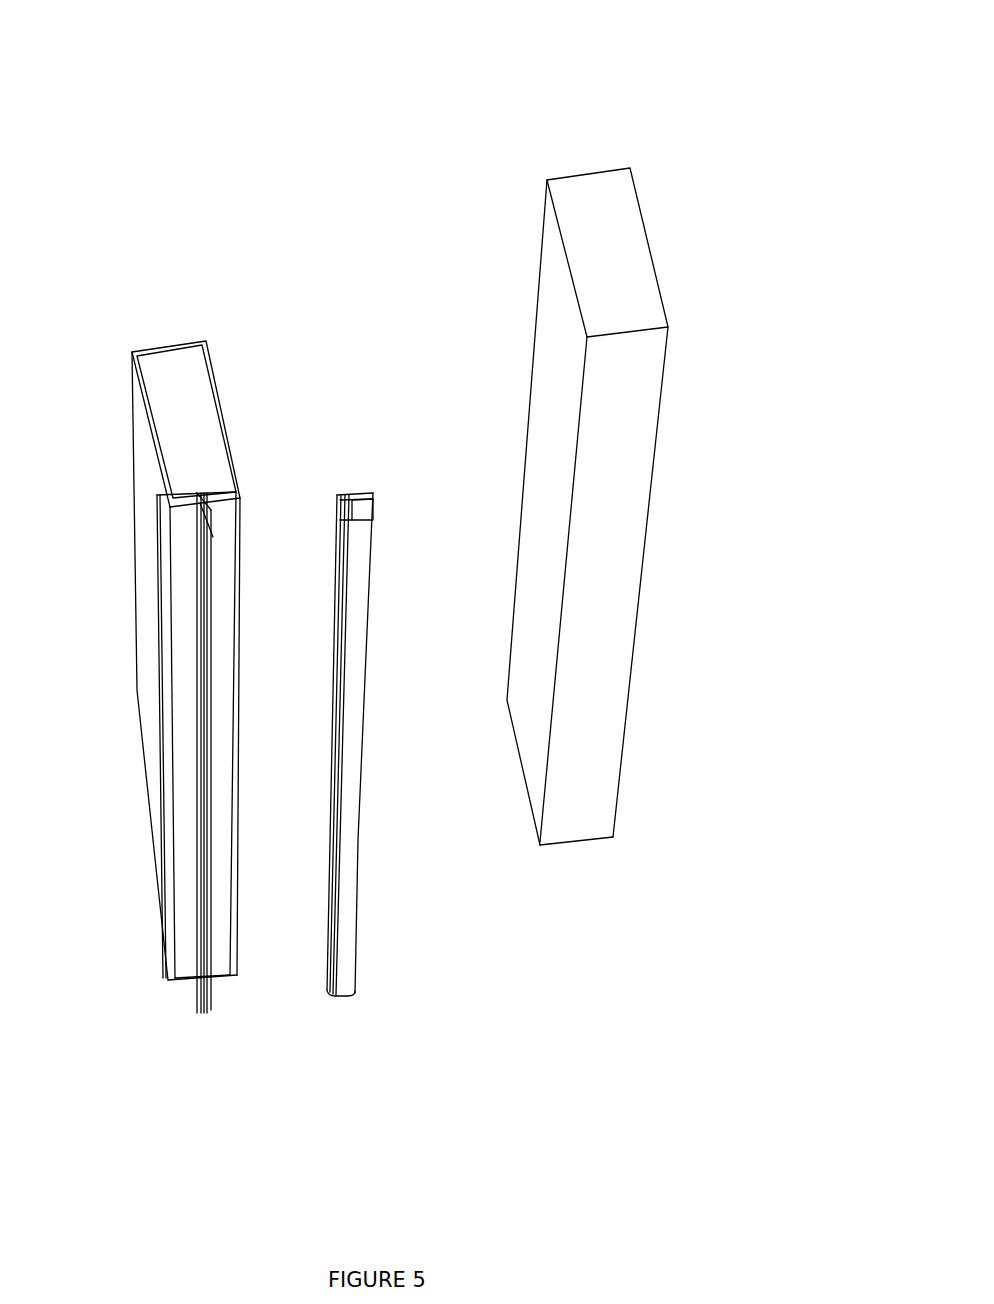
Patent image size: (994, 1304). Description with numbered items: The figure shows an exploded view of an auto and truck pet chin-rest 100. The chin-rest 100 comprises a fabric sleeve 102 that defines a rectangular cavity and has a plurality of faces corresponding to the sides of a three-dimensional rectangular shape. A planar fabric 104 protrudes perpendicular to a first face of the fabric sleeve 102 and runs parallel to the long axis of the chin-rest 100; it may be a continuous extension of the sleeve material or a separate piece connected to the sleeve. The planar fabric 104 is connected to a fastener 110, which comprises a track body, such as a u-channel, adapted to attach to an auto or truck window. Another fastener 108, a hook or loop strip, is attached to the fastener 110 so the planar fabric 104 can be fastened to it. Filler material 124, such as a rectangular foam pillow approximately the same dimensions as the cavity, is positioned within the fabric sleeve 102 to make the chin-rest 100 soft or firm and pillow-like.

The chin-rest 100 is at (451, 47).
The fabric sleeve 102 is at (147, 660).
The planar fabric 104 is at (157, 763).
The another fastener 108 is at (314, 744).
The fastener 110 is at (326, 486).
The filler material 124 is at (564, 506).